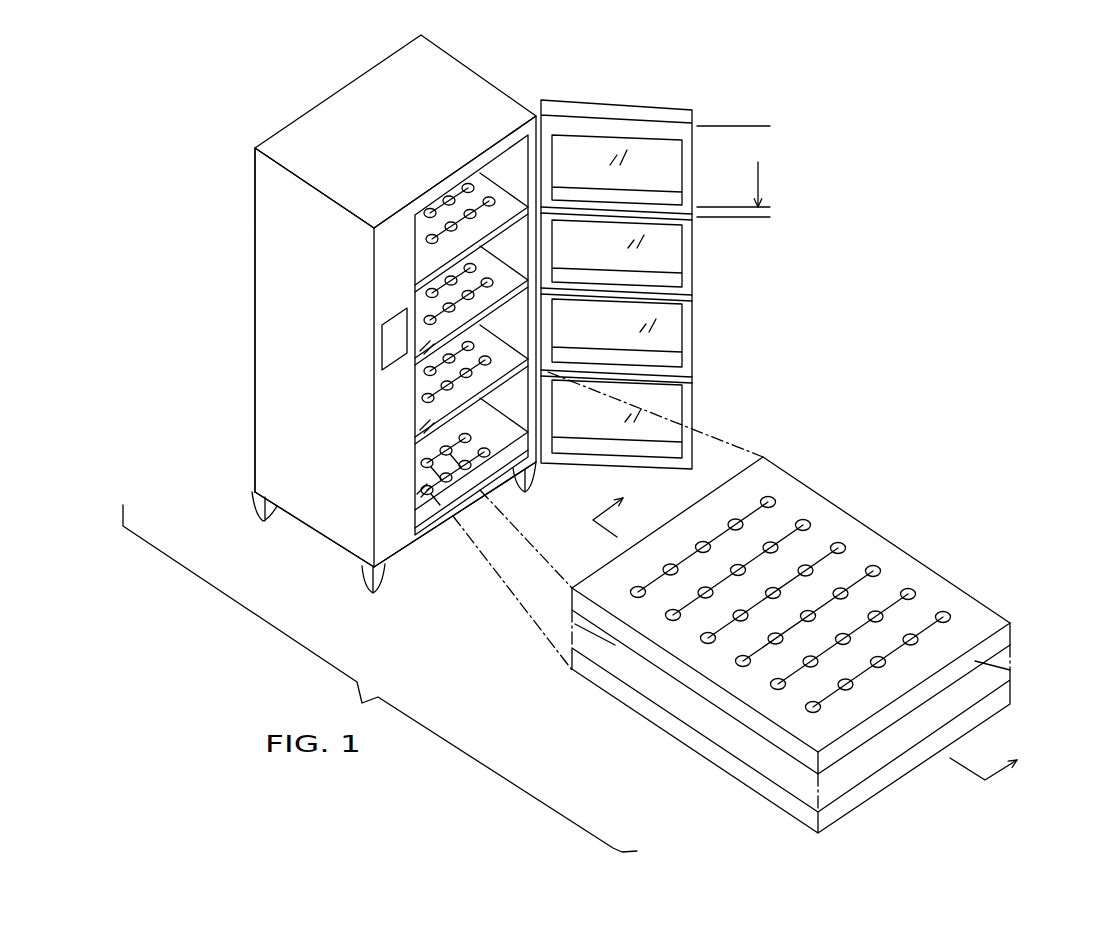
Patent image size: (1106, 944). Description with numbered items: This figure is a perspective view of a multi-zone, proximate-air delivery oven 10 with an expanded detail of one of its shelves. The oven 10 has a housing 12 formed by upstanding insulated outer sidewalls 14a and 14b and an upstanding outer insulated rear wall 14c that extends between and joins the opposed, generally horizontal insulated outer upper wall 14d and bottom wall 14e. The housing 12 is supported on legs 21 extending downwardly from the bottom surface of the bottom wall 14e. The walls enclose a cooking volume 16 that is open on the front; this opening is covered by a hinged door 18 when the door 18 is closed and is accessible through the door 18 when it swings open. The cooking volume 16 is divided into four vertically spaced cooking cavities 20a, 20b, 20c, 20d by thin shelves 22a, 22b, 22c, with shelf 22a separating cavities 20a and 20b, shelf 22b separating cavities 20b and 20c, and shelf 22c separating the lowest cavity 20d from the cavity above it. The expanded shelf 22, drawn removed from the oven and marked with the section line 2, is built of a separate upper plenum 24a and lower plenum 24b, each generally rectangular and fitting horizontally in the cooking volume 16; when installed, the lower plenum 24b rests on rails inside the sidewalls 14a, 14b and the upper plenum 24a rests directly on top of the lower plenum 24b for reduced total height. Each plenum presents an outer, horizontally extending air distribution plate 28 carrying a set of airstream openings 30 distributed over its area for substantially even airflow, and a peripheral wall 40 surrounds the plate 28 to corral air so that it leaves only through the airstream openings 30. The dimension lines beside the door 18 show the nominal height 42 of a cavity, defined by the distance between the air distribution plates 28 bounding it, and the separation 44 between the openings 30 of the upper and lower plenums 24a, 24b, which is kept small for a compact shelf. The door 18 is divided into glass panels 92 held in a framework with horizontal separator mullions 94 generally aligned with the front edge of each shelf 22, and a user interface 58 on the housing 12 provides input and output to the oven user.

The multi-zone, proximate-air delivery oven 10 is at (612, 74).
The housing 12 is at (298, 120).
The outer sidewall 14a is at (265, 250).
The outer sidewall 14b is at (500, 70).
The outer rear wall 14c is at (236, 191).
The outer upper wall 14d is at (355, 98).
The outer bottom wall 14e is at (313, 546).
The cooking volume 16 is at (510, 508).
The hinged door 18 is at (692, 110).
The cooking cavity 20a is at (422, 260).
The cooking cavity 20b is at (422, 370).
The cooking cavity 20c is at (410, 443).
The cooking cavity 20d is at (410, 495).
The leg 21 is at (253, 497).
The shelf 22 is at (975, 570).
The shelf 22a is at (517, 228).
The shelf 22b is at (517, 308).
The shelf 22c is at (517, 387).
The upper plenum 24a is at (889, 538).
The lower plenum 24b is at (1013, 689).
The air distribution plate 28 is at (830, 520).
The airstream openings 30 is at (672, 619).
The peripheral wall 40 is at (693, 687).
The nominal height 42 is at (733, 126).
The separation 44 is at (758, 165).
The user interface 58 is at (388, 338).
The glass panels 92 is at (637, 150).
The horizontal separator mullions 94 is at (652, 218).
The section line 2- 2 is at (805, 639).